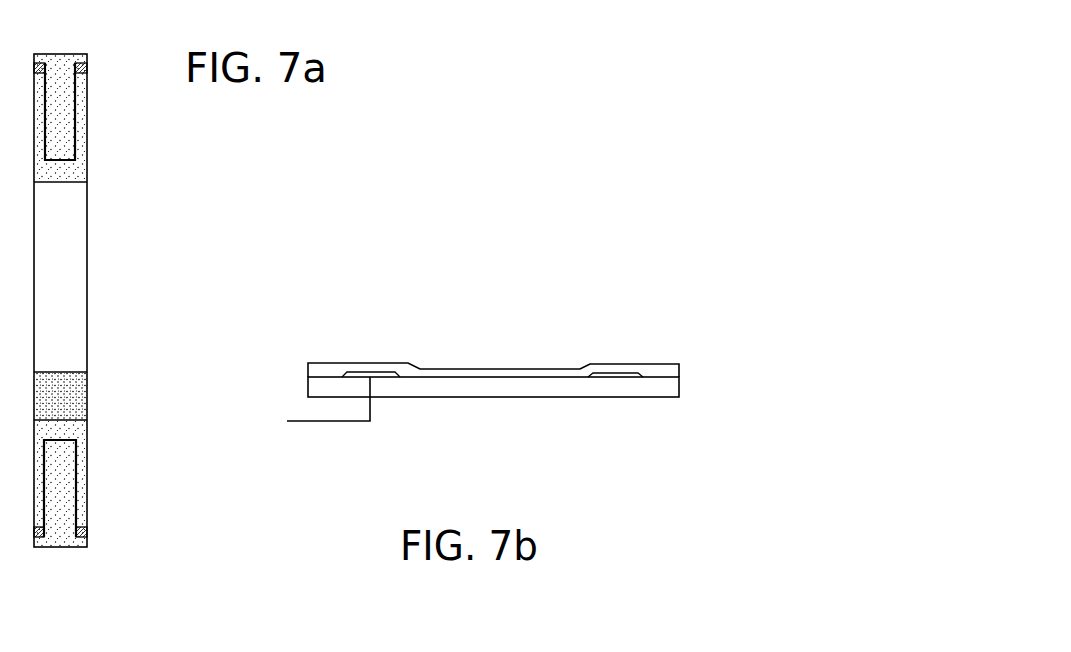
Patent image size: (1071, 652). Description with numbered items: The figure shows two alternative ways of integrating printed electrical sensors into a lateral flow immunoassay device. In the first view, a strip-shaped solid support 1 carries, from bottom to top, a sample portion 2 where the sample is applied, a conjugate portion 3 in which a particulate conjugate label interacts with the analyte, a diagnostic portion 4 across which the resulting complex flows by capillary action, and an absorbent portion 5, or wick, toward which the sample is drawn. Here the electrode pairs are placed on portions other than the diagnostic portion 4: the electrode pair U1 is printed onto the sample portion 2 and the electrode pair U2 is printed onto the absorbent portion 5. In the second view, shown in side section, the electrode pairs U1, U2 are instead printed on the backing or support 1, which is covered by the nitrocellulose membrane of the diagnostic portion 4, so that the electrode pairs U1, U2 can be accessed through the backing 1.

In FIG. 7b, the solid support 1 is at (521, 403).
In FIG. 7a, the sample portion 2 is at (80, 478).
In FIG. 7a, the conjugate portion 3 is at (78, 390).
In FIG. 7a, the diagnostic portion 4 is at (66, 290).
In FIG. 7b, the diagnostic portion 4 is at (460, 360).
In FIG. 7a, the absorbent portion 5 is at (77, 158).
In FIG. 7a, the electrode pair U1 is at (80, 505).
In FIG. 7b, the electrode pair U1 is at (389, 381).
In FIG. 7a, the electrode pair U2 is at (73, 92).
In FIG. 7b, the electrode pair U2 is at (635, 377).